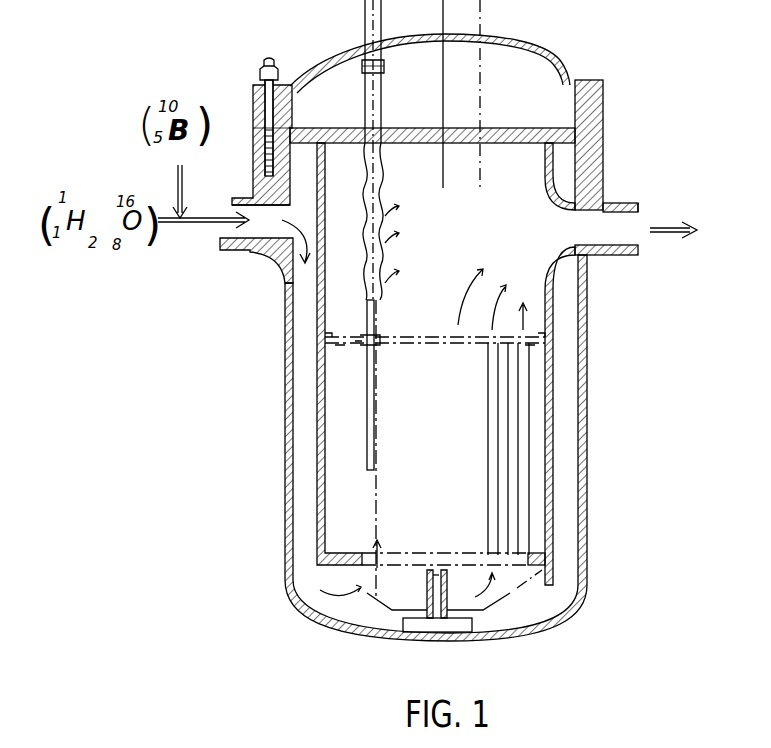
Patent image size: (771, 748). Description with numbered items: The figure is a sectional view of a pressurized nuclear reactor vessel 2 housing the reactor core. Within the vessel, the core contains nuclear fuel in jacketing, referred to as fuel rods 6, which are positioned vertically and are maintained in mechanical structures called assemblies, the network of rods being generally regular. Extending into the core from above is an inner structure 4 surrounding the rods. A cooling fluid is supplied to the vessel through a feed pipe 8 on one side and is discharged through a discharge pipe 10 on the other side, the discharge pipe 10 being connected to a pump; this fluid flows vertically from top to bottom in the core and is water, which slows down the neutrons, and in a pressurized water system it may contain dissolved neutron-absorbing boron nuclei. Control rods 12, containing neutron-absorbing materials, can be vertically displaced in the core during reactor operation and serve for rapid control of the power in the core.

The pressurized nuclear reactor vessel 2 is at (285, 484).
The inner liner / reaction chamber 4 is at (317, 523).
The fuel rods 6 is at (505, 478).
The feed pipe 8 is at (245, 243).
The discharge pipe 10 is at (625, 256).
The control rods 12 is at (372, 410).